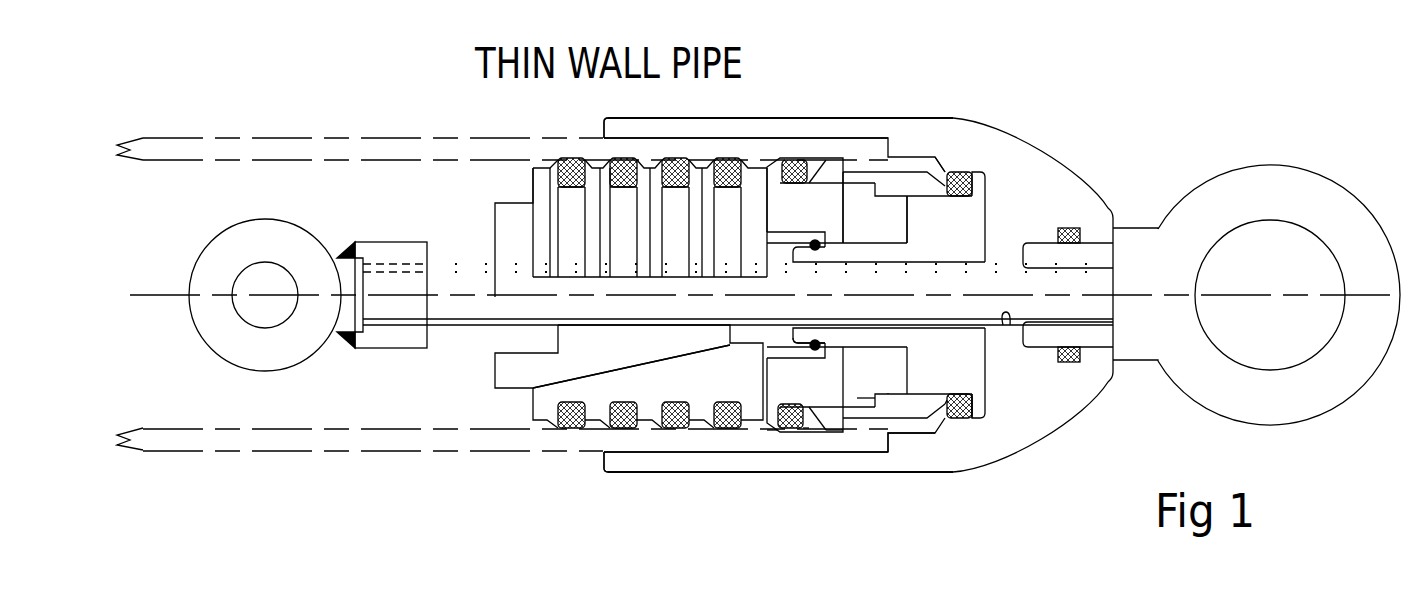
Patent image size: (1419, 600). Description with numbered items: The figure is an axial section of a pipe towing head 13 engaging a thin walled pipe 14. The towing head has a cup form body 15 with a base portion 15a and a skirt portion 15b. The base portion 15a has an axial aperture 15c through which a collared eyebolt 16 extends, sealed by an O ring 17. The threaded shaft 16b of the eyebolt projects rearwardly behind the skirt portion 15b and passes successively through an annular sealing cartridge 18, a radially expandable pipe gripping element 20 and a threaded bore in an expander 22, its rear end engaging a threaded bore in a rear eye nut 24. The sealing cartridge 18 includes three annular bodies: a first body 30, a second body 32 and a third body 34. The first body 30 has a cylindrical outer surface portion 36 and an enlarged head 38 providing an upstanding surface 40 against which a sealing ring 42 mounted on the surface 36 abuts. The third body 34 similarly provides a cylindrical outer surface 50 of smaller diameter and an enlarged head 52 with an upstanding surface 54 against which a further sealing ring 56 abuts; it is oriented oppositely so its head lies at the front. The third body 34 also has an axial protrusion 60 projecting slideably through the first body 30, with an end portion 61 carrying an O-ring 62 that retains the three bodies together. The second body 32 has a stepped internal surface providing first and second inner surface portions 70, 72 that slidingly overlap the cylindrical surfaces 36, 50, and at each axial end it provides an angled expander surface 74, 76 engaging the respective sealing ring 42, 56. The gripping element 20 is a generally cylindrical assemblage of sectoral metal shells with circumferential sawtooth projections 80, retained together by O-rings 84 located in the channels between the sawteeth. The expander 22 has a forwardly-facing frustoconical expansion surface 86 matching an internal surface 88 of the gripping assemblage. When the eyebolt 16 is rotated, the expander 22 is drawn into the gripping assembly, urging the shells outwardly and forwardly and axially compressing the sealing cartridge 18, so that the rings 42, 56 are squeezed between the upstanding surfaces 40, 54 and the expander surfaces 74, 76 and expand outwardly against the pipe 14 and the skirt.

The pipe towing head 13 is at (1036, 114).
The thin walled pipe 14 is at (458, 138).
The cup form body 15 is at (955, 120).
The base portion 15a is at (1060, 182).
The skirt portion 15b is at (822, 117).
The axial aperture 15c is at (1005, 326).
The collared eyebolt 16 is at (1192, 402).
The threaded shaft 16b is at (457, 311).
The O ring 17 is at (1070, 365).
The annular sealing cartridge 18 is at (867, 426).
The radially expandable pipe gripping element 20 is at (665, 386).
The expander 22 is at (517, 380).
The rear eye nut 24 is at (292, 372).
The first annular body 30 is at (876, 295).
The second annular body 32 is at (907, 295).
The third annular body 34 is at (946, 295).
The cylindrical outer surface portion 36 is at (832, 398).
The enlarged head 38 is at (770, 428).
The upstanding surface 40 is at (793, 428).
The sealing ring 42 is at (792, 406).
The cylindrical outer surface 50 is at (935, 396).
The enlarged head 52 is at (978, 412).
The upstanding surface 54 is at (960, 420).
The sealing ring 56 is at (953, 172).
The axial protrusion 60 is at (868, 242).
The end portion 61 is at (793, 333).
The O-ring 62 is at (817, 344).
The first inner surface portion 70 is at (857, 398).
The second inner surface portion 72 is at (888, 393).
The angled expander surface 74 is at (815, 165).
The angled expander surface 76 is at (945, 183).
The circumferential sawtooth projections 80 is at (714, 160).
The O-rings 84 is at (730, 428).
The frustoconical expansion surface 86 is at (577, 373).
The internal surface 88 is at (623, 380).